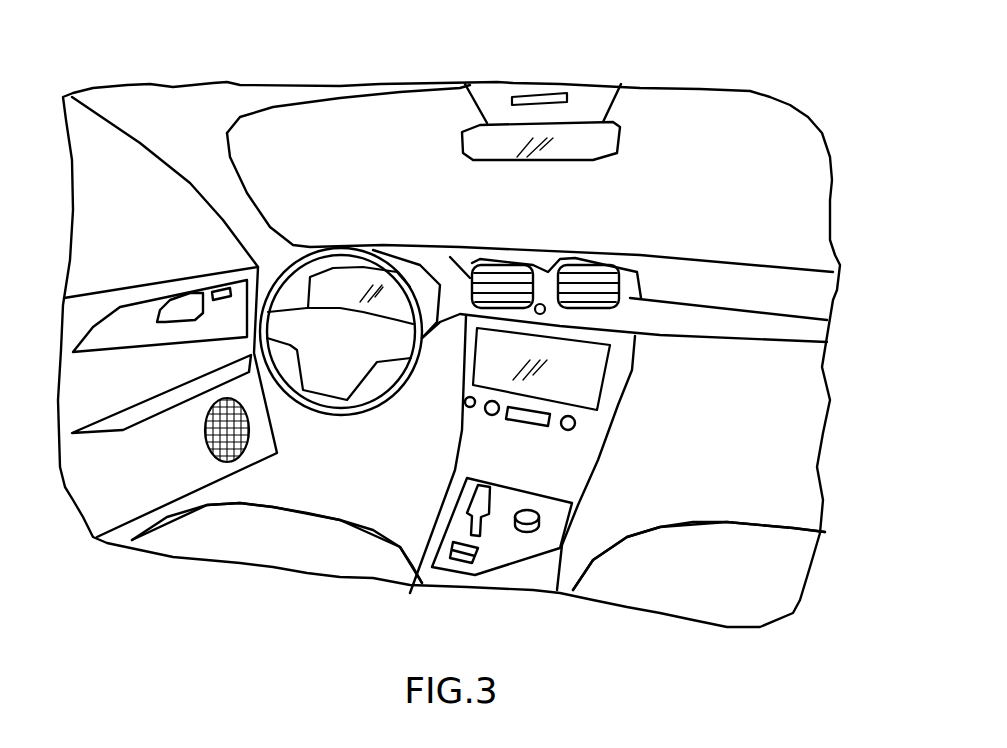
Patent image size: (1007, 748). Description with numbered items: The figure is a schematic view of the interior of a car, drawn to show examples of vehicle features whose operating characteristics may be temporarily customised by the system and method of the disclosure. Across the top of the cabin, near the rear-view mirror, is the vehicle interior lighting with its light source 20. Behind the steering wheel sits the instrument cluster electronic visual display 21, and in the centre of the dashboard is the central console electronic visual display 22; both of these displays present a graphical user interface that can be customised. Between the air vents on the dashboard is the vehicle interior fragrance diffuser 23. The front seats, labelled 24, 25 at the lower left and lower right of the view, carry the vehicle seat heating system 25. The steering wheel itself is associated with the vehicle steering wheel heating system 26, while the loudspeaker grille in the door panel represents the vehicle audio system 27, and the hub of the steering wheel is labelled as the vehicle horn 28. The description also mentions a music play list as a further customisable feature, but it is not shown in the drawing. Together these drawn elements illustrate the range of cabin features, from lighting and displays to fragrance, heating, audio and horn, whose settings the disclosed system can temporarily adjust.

The light source 20 is at (533, 100).
The instrument cluster electronic visual display 21 is at (338, 292).
The central console electronic visual display 22 is at (500, 352).
The vehicle interior fragrance diffuser 23 is at (545, 305).
The vehicle seat 24 is at (285, 550).
The vehicle seat heating system 25 is at (667, 587).
The vehicle steering wheel heating system 26 is at (273, 272).
The vehicle audio system 27 is at (226, 430).
The vehicle horn 28 is at (315, 343).